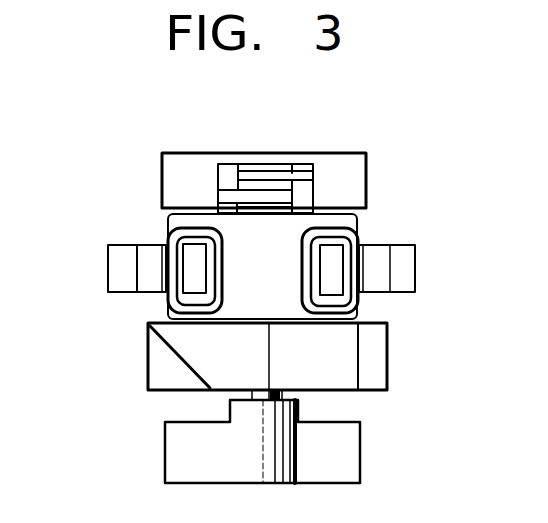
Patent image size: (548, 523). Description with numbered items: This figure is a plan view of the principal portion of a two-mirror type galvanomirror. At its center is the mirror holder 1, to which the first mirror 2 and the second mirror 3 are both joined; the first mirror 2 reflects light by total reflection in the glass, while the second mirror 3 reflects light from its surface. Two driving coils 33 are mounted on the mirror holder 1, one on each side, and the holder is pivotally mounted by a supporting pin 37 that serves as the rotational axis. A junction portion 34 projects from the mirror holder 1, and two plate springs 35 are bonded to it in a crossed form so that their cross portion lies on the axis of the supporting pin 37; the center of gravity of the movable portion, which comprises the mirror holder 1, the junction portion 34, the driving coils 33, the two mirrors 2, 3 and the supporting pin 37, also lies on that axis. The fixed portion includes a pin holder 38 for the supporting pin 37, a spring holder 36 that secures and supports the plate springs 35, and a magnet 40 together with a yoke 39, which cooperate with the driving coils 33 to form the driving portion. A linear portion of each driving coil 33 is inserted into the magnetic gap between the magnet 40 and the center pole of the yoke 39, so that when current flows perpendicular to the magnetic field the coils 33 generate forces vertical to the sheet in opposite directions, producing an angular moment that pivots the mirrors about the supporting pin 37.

The mirror holder 1 is at (230, 230).
The first mirror 2 is at (163, 373).
The second mirror 3 is at (388, 352).
The driving coil 33 is at (165, 235).
The junction portion 34 is at (303, 195).
The plate spring 35 is at (263, 173).
The spring holder 36 is at (335, 163).
The supporting pin 37 is at (277, 412).
The pin holder 38 is at (178, 458).
The yoke 39 is at (108, 275).
The magnet 40 is at (148, 253).